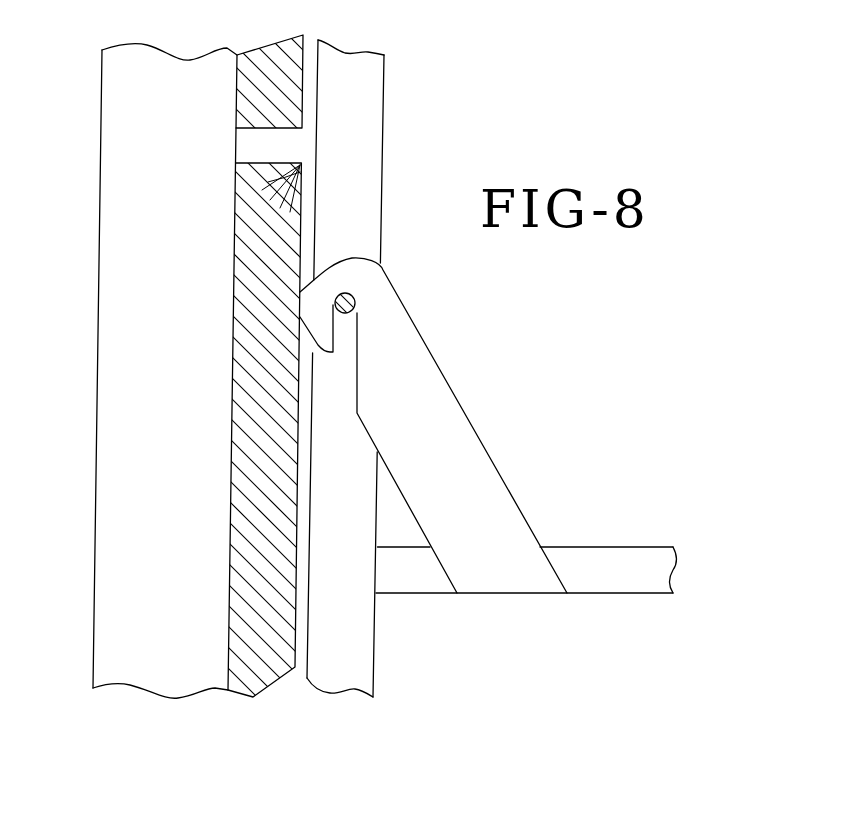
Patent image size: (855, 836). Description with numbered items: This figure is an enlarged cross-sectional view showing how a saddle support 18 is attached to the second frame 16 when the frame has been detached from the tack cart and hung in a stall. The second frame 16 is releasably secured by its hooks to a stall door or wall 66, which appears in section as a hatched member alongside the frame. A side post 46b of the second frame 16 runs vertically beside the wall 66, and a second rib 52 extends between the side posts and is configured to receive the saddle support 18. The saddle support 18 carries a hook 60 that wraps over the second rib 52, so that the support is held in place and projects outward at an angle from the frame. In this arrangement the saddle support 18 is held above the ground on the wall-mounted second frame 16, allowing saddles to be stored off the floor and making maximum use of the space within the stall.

The second frame 16 is at (392, 100).
The side post 46b is at (368, 143).
The stall door or wall 66 is at (245, 310).
The second rib 52 is at (356, 298).
The hook 60 is at (430, 397).
The saddle support 18 is at (592, 536).